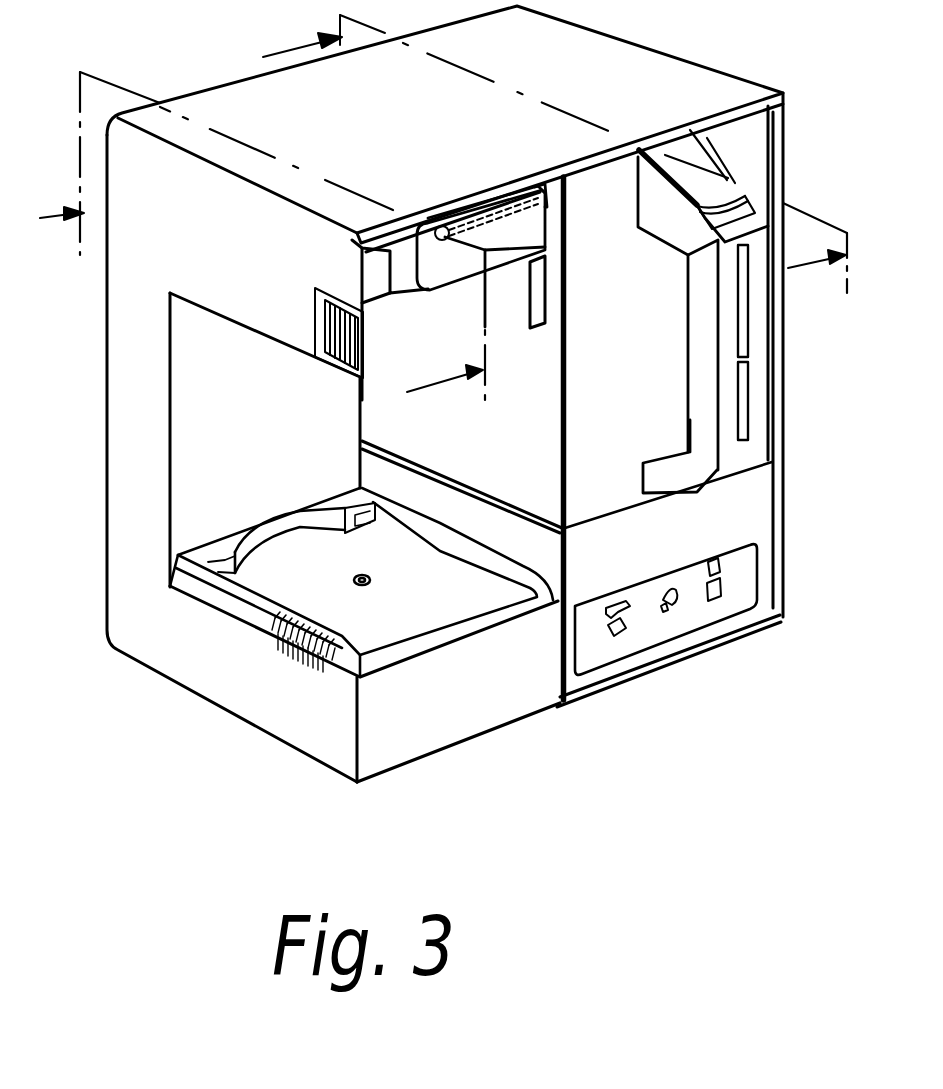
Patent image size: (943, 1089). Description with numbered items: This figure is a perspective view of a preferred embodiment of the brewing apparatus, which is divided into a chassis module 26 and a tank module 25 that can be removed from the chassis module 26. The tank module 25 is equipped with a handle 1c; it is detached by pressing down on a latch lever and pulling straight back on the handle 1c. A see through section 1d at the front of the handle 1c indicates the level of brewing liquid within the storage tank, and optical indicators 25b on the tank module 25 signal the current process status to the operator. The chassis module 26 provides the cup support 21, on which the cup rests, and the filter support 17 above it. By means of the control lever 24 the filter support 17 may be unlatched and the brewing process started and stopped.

The chassis module 26 is at (515, 692).
The filter support 17 is at (400, 338).
The control lever 24 is at (506, 237).
The cup support 21 is at (397, 624).
The handle 1c is at (752, 460).
The see through section 1d is at (745, 350).
The tank module 25 is at (718, 518).
The optical indicators 25b is at (717, 603).